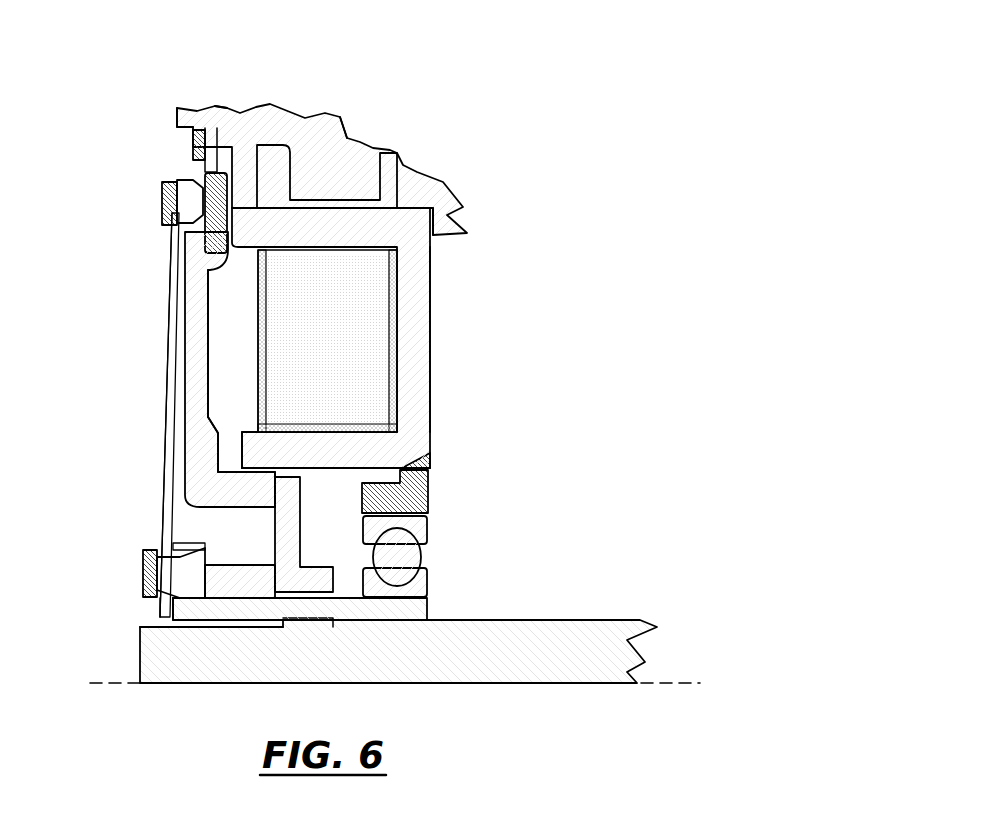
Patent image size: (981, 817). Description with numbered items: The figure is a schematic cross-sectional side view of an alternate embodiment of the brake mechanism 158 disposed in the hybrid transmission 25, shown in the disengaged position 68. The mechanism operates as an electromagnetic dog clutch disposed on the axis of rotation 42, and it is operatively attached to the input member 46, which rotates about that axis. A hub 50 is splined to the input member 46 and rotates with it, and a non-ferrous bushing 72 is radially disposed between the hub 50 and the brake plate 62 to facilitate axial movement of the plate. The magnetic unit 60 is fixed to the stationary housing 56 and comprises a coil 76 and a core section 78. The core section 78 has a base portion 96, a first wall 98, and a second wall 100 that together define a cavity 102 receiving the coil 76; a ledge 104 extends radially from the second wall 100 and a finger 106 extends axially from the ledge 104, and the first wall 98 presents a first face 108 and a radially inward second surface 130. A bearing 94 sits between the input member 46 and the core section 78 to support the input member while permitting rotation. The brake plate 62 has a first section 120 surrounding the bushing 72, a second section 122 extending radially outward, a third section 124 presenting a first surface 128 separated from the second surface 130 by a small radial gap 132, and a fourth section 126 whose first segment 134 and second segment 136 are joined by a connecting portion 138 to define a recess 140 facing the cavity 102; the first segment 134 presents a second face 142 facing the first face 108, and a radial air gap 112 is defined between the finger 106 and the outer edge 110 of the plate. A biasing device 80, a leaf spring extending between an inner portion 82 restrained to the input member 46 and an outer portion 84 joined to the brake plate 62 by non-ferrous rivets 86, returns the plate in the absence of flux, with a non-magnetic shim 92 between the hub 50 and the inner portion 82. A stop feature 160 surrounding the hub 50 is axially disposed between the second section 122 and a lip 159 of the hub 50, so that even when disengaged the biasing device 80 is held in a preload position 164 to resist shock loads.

The hybrid transmission 25 is at (102, 84).
The axis of rotation 42 is at (120, 682).
The input member 46 is at (150, 642).
The hub 50 is at (178, 598).
The housing 56 is at (222, 120).
The magnetic unit 60 is at (427, 312).
The brake plate 62 is at (208, 318).
The disengaged position 68 is at (100, 129).
The bushing 72 is at (302, 598).
The coil 76 is at (335, 350).
The core section 78 is at (427, 362).
The biasing device 80 is at (168, 385).
The inner portion 82 is at (157, 545).
The outer portion 84 is at (183, 209).
The rivets 86 is at (162, 198).
The shim 92 is at (157, 545).
The bearing 94 is at (397, 566).
The base portion 96 is at (427, 407).
The first wall 98 is at (352, 452).
The second wall 100 is at (343, 232).
The cavity 102 is at (371, 254).
The ledge 104 is at (247, 192).
The finger 106 is at (212, 167).
The first face 108 is at (242, 459).
The outer edge 110 is at (185, 170).
The radial air gap 112 is at (231, 190).
The first section 120 is at (322, 620).
The second section 122 is at (285, 545).
The third section 124 is at (215, 492).
The fourth section 126 is at (175, 412).
The first surface 128 is at (278, 466).
The second surface 130 is at (278, 477).
The small radial gap 132 is at (282, 503).
The first segment 134 is at (195, 447).
The second segment 136 is at (212, 181).
The connecting portion 138 is at (205, 340).
The recess 140 is at (240, 293).
The second face 142 is at (221, 454).
The brake mechanism 158 is at (154, 93).
The lip 159 is at (163, 598).
The stop feature 160 is at (193, 617).
The preload position 164 is at (109, 158).